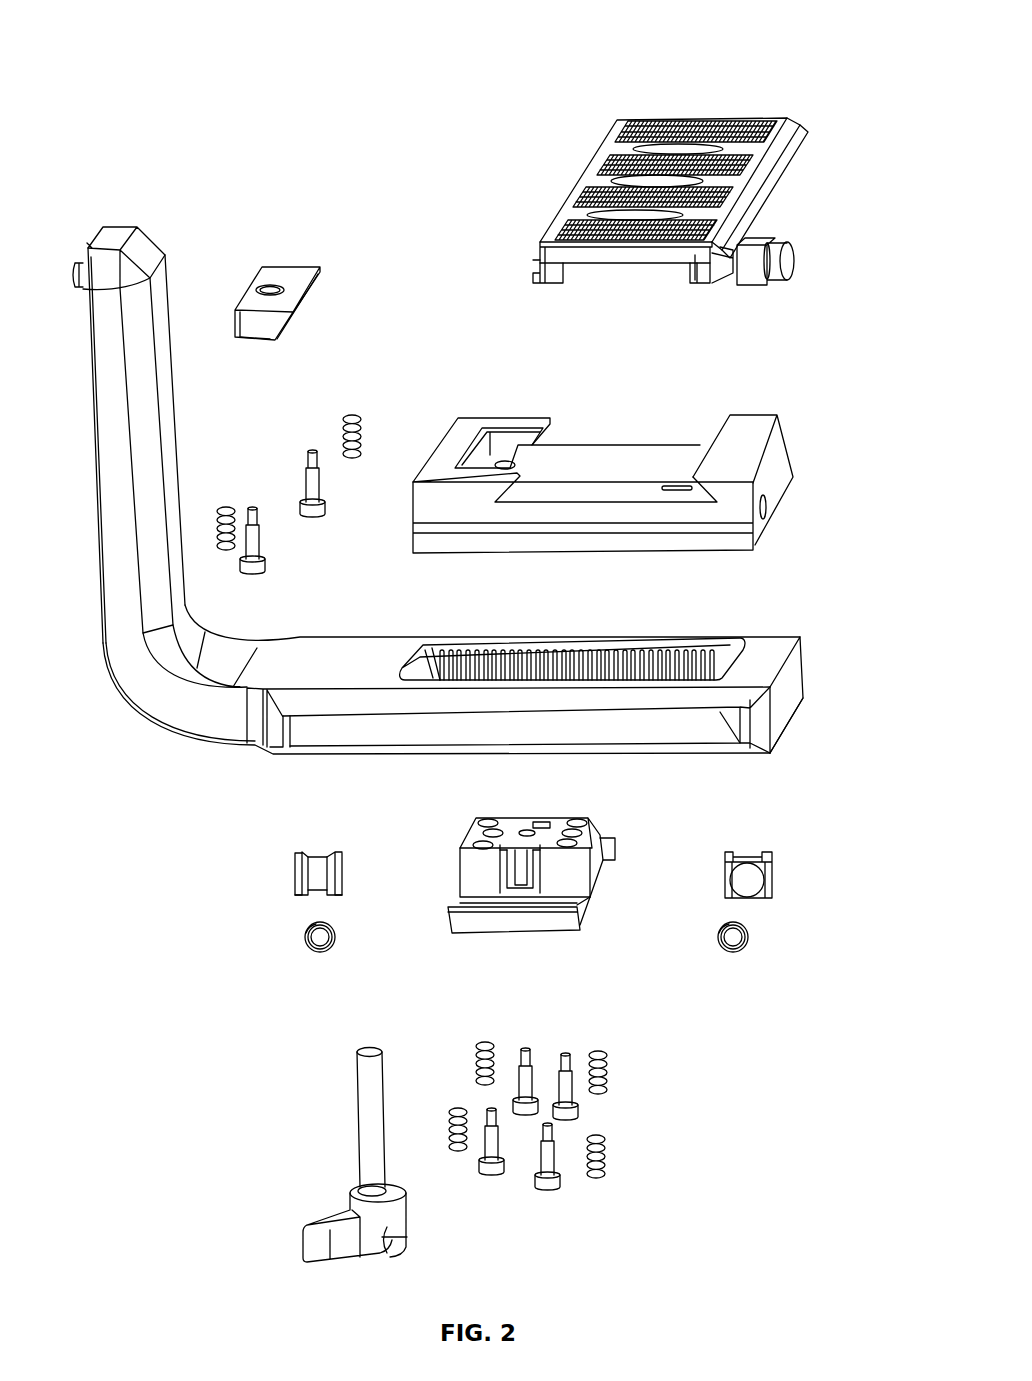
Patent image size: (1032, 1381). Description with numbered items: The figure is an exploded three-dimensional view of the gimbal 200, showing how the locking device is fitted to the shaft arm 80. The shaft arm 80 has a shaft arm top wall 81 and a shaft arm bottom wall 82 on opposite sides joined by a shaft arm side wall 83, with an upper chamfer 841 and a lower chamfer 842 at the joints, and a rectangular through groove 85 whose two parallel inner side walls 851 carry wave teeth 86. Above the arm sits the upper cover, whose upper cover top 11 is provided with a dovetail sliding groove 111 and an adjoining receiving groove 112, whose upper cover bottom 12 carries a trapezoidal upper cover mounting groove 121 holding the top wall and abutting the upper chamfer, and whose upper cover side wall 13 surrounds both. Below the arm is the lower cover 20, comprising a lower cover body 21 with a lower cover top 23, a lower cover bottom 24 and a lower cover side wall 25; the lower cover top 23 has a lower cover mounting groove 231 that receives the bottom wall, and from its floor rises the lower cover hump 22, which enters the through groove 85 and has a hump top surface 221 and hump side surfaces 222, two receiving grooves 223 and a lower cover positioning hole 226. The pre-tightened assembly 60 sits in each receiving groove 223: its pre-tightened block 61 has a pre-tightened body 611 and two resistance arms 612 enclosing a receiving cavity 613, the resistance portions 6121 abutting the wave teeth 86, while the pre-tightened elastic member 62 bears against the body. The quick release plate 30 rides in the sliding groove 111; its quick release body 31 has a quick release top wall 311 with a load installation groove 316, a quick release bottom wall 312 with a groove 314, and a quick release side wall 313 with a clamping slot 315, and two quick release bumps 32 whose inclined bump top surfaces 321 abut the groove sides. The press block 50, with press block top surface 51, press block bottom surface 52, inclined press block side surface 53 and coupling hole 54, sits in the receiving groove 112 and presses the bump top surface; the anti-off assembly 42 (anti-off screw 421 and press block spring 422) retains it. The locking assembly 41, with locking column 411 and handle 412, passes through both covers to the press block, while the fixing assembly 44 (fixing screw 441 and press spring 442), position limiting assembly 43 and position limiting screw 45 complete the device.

The gimbal 200 is at (372, 38).
The upper cover top 11 is at (636, 473).
The sliding groove 111 is at (640, 450).
The receiving groove 112 is at (510, 437).
The upper cover bottom 12 is at (760, 545).
The upper cover mounting groove 121 is at (775, 508).
The upper cover side wall 13 is at (780, 452).
The lower cover 20 is at (547, 881).
The lower cover body 21 is at (600, 893).
The lower cover hump 22 is at (597, 862).
The hump top surface 221 is at (478, 822).
The hump side surface 222 is at (488, 892).
The receiving groove 223 is at (500, 867).
The lower cover positioning hole 226 is at (553, 822).
The lower cover top 23 is at (610, 840).
The lower cover mounting groove 231 is at (580, 905).
The lower cover bottom 24 is at (550, 935).
The lower cover side wall 25 is at (590, 897).
The quick release plate 30 is at (660, 212).
The quick release body 31 is at (760, 183).
The quick release top wall 311 is at (735, 122).
The quick release bottom wall 312 is at (556, 283).
The quick release side wall 313 is at (540, 275).
The groove 314 is at (610, 270).
The clamping slot 315 is at (695, 278).
The load installation groove 316 is at (625, 180).
The quick release bump 32 is at (770, 212).
The bump top surface 321 is at (797, 147).
The locking assembly 41 is at (312, 1155).
The locking column 411 is at (368, 1170).
The handle 412 is at (355, 1205).
The anti-off assembly 42 is at (275, 493).
The anti-off screw 421 is at (255, 511).
The press block spring 422 is at (222, 507).
The position limiting assembly 43 is at (760, 275).
The fixing assembly 44 is at (528, 1160).
The fixing screw 441 is at (550, 1185).
The press spring 442 is at (590, 1172).
The position limiting screw 45 is at (722, 283).
The press block 50 is at (307, 302).
The press block top surface 51 is at (292, 273).
The press block bottom surface 52 is at (263, 340).
The press block side surface 53 is at (287, 333).
The coupling hole 54 is at (262, 288).
The pre-tightened assembly 60 is at (558, 883).
The pre-tightened block 61 is at (541, 864).
The pre-tightened body 611 is at (325, 852).
The resistance arm 612 is at (300, 852).
The resistance portion 6121 is at (300, 897).
The receiving cavity 613 is at (338, 897).
The pre-tightened elastic member 62 is at (322, 950).
The shaft arm 80 is at (475, 541).
The shaft arm top wall 81 is at (780, 645).
The shaft arm bottom wall 82 is at (790, 725).
The shaft arm side wall 83 is at (720, 730).
The upper chamfer 841 is at (300, 700).
The lower chamfer 842 is at (345, 755).
The through groove 85 is at (727, 660).
The inner side wall 851 is at (455, 658).
The wave teeth 86 is at (527, 650).